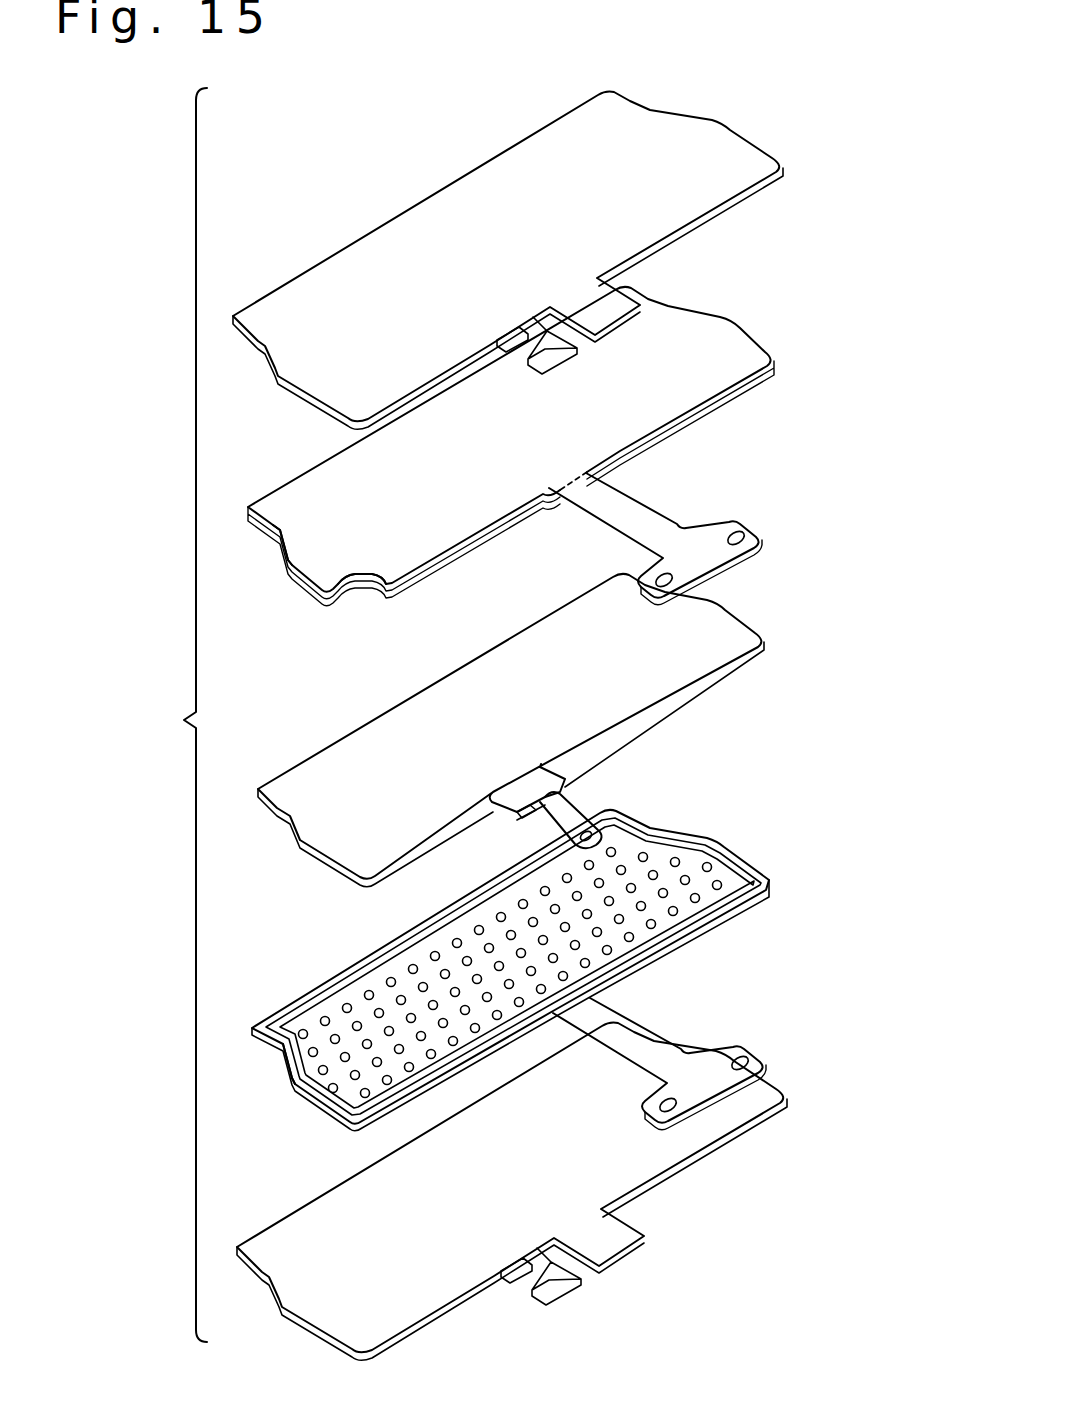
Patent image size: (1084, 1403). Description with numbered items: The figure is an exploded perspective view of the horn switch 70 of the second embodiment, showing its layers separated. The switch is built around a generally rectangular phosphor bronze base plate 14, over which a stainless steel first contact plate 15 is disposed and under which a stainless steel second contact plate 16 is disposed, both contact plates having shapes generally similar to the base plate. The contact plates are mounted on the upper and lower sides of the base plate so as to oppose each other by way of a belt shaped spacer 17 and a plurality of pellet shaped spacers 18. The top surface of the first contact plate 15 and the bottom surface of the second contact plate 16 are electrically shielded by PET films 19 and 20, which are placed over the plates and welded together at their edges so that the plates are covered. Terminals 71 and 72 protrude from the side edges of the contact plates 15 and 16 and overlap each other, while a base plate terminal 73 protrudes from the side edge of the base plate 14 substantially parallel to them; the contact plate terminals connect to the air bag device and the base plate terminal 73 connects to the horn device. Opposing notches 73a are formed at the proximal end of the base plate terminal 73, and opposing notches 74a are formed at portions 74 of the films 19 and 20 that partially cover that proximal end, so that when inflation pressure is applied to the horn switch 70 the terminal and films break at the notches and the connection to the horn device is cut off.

The horn switch 70 is at (167, 715).
The film 19 is at (745, 143).
The first contact plate 15 is at (529, 446).
The base plate 14 is at (540, 730).
The second contact plate 16 is at (522, 968).
The film 20 is at (712, 1140).
The belt shaped spacer 17 is at (290, 582).
The pellet shaped spacers 18 is at (372, 608).
The terminal 71 is at (637, 510).
The terminal 72 is at (632, 1027).
The base plate terminal 73 is at (583, 798).
The notches 73a is at (531, 827).
The portions of the films 74 is at (556, 362).
The notches 74a is at (528, 360).